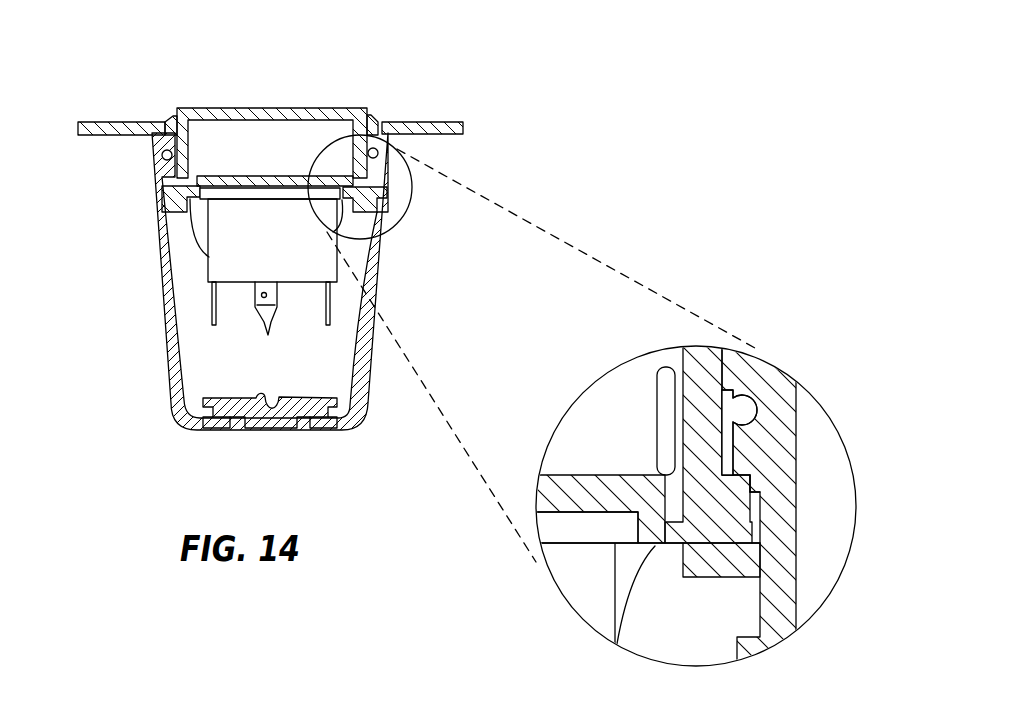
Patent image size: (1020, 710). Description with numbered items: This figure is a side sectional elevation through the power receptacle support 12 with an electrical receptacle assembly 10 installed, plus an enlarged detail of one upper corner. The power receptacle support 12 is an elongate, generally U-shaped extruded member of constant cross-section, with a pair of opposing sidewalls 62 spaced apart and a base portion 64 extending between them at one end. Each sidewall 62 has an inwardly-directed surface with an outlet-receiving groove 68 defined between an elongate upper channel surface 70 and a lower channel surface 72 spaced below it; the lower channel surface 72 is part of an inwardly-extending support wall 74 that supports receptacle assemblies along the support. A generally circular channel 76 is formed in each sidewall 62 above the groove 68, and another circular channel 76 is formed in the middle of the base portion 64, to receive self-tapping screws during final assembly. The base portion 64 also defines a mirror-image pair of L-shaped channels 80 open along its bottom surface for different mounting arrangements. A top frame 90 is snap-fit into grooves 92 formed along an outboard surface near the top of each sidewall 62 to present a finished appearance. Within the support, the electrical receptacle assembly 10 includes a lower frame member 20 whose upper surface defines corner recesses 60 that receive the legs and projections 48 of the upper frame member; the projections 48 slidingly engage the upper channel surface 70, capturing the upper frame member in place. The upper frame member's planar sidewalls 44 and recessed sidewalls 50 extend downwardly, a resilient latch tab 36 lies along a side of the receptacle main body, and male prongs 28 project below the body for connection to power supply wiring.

The electrical receptacle assembly 10 is at (352, 82).
The power receptacle support 12 is at (158, 316).
The lower frame member 20 is at (600, 492).
The male prongs 28 is at (213, 327).
The resilient latch tab 36 is at (636, 587).
The sidewalls 44 is at (678, 370).
The projection 48 is at (746, 466).
The recessed sidewalls 50 is at (609, 402).
The corner recesses 60 is at (672, 474).
The sidewalls 62 is at (158, 278).
The base portion 64 is at (268, 432).
The outlet-receiving groove 68 is at (751, 504).
The upper channel surface 70 is at (755, 487).
The lower channel surface 72 is at (762, 538).
The support wall 74 is at (698, 580).
The circular channel 76 is at (745, 408).
The L-shaped channels 80 is at (236, 442).
The top frame 90 is at (101, 122).
The grooves 92 is at (163, 118).